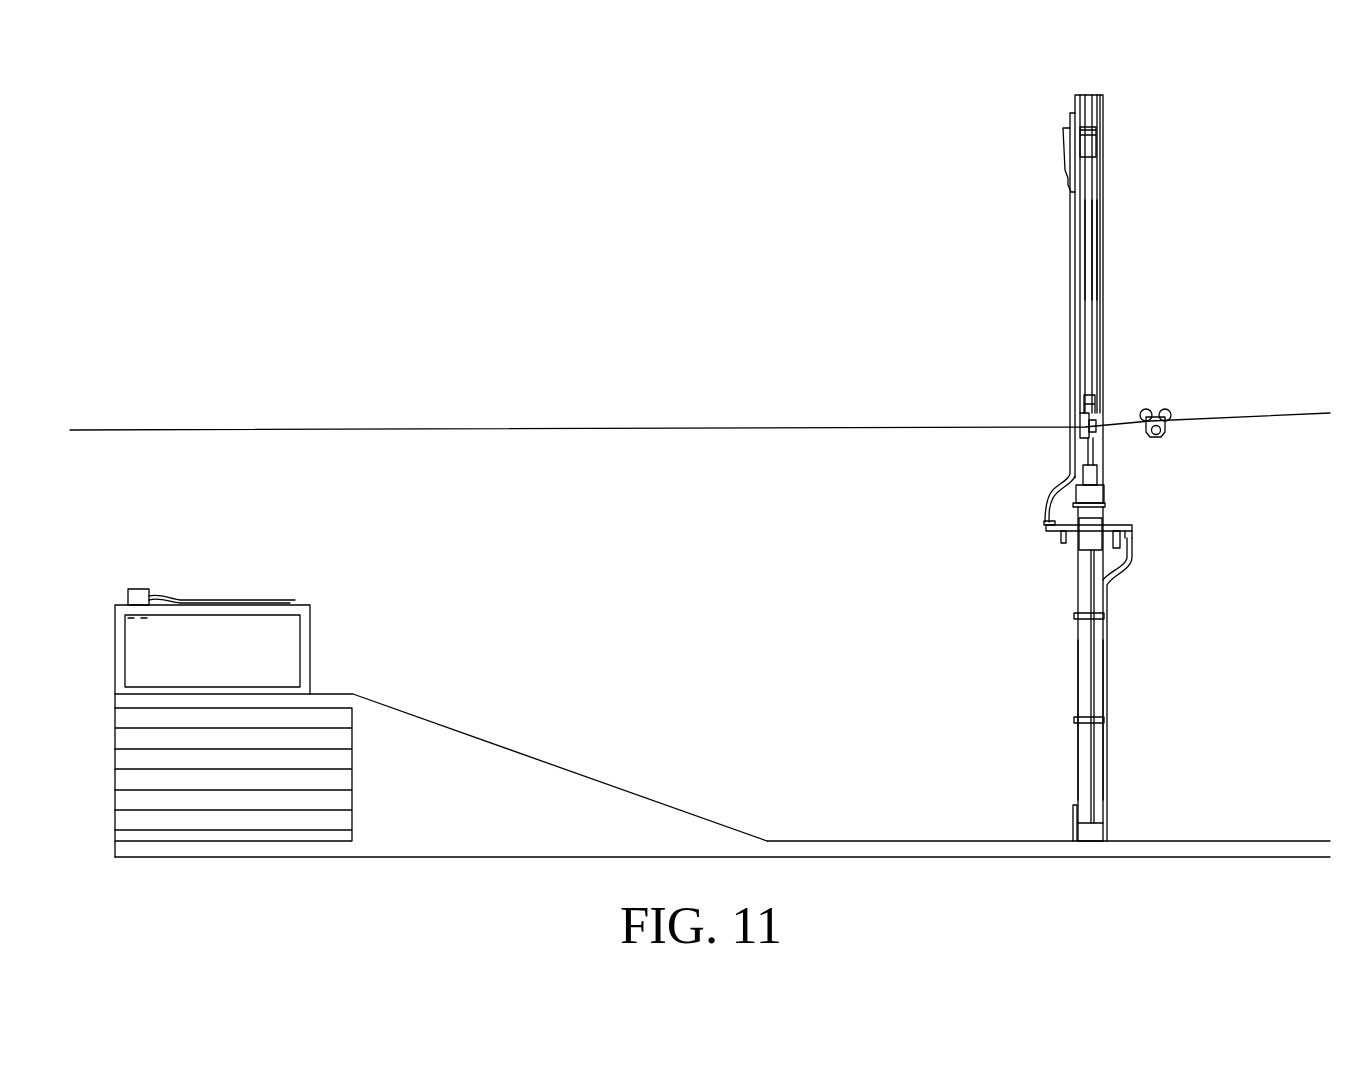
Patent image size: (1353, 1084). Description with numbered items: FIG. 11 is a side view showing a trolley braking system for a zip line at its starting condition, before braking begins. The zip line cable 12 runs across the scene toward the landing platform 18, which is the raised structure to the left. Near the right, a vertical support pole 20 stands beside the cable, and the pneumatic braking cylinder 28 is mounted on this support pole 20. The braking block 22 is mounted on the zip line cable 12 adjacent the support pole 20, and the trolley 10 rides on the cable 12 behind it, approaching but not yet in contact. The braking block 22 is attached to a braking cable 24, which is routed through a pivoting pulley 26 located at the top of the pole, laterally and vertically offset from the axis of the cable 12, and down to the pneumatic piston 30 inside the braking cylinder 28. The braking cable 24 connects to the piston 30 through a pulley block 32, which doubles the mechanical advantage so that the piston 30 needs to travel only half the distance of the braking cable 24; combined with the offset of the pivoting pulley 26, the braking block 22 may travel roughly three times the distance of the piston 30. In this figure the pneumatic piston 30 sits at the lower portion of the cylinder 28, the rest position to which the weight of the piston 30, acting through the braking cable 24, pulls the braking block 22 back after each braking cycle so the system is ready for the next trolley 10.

The trolley 10 is at (1165, 436).
The zip line cable 12 is at (1293, 413).
The landing platform 18 is at (328, 693).
The support pole 20 is at (1092, 95).
The braking block 22 is at (1083, 413).
The braking cable 24 is at (1080, 288).
The pivoting pulley 26 is at (1087, 140).
The pneumatic braking cylinder 28 is at (1075, 757).
The pneumatic piston 30 is at (1097, 833).
The pulley block 32 is at (1097, 400).